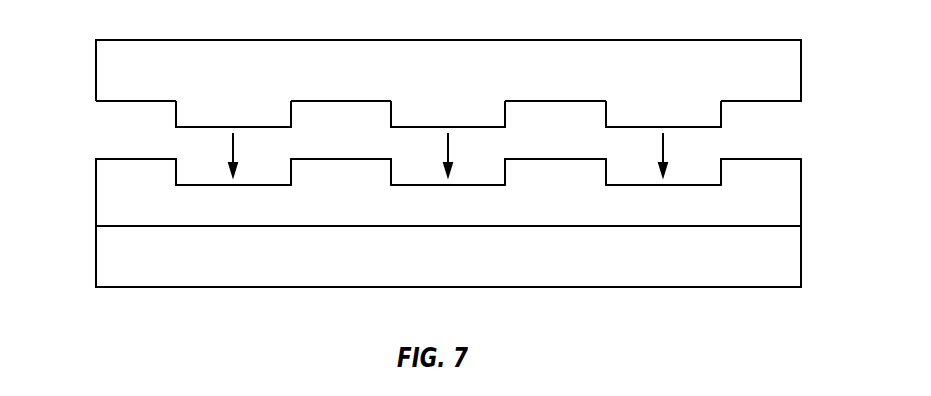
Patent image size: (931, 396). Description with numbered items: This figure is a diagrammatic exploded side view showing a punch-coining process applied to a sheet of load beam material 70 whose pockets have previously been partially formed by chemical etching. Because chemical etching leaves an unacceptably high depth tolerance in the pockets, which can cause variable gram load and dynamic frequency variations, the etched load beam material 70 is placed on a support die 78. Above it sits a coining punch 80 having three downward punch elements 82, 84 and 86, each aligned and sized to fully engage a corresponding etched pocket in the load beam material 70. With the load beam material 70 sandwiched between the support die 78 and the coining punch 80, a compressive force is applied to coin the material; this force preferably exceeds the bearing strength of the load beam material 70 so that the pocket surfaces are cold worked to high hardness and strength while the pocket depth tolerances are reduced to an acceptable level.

The load beam material 70 is at (96, 193).
The support die 78 is at (222, 287).
The coining punch 80 is at (340, 40).
The punch element 82 is at (175, 114).
The punch element 84 is at (389, 114).
The punch element 86 is at (604, 114).